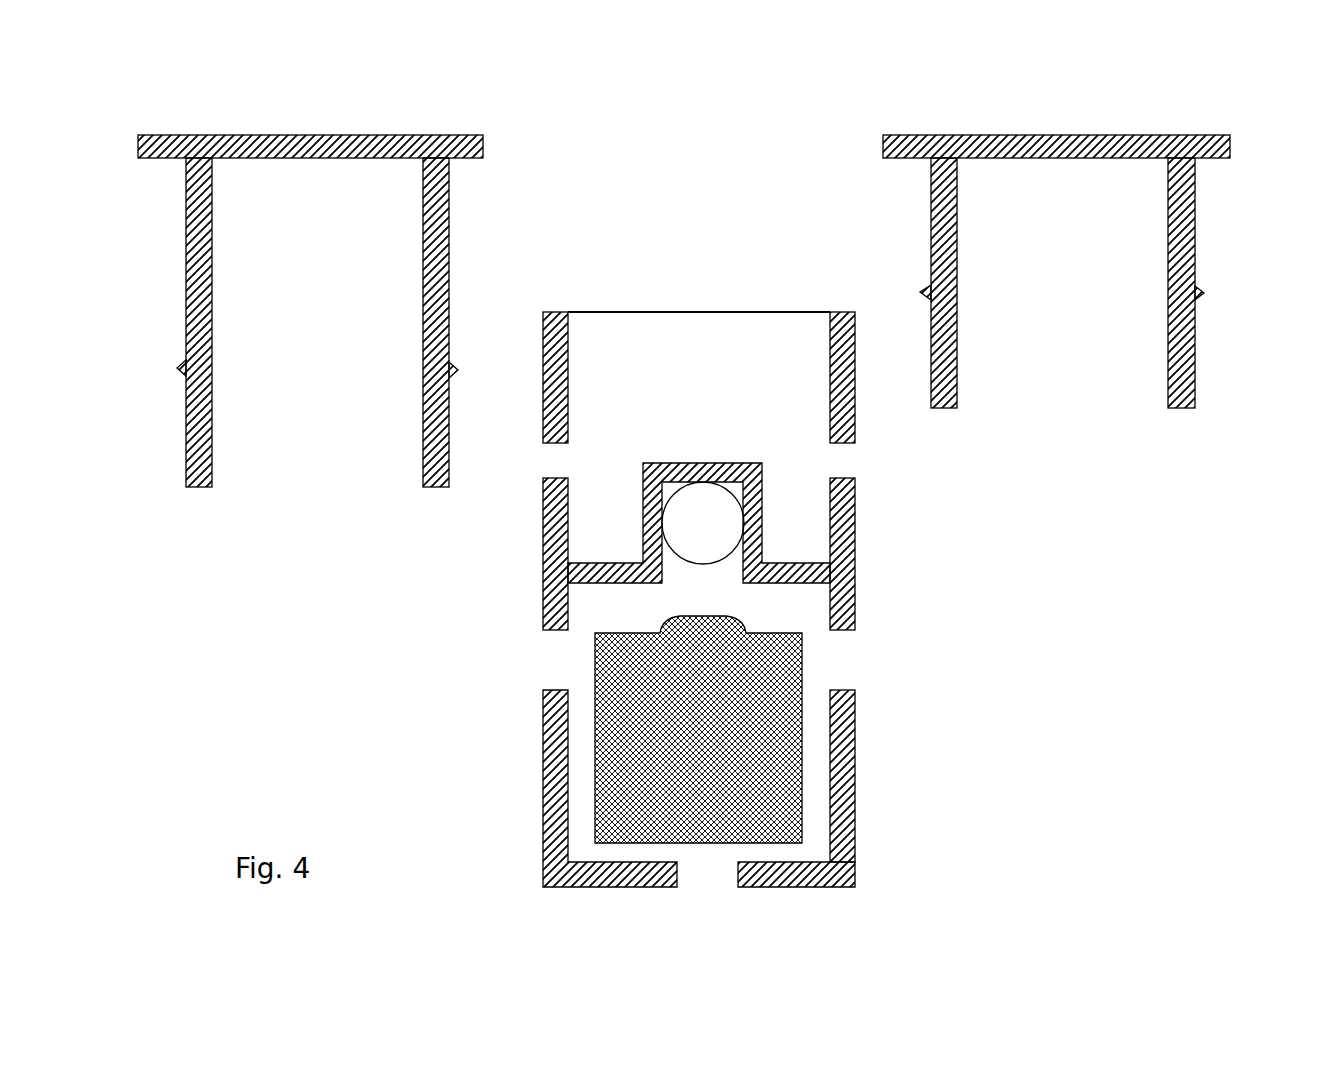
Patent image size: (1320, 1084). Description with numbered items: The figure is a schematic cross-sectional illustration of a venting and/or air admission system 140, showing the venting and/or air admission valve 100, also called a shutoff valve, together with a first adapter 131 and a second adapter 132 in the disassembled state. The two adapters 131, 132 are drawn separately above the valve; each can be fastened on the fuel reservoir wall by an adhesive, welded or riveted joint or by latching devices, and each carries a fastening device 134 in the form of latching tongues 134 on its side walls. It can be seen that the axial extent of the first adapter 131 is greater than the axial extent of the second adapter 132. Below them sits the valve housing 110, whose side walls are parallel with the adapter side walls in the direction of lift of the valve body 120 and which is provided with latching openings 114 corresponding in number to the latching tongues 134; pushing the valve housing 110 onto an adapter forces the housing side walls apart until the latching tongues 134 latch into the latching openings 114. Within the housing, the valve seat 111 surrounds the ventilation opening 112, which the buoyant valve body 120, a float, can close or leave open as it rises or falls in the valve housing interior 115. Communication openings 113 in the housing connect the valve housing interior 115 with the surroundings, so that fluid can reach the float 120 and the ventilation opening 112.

The venting and/or air admission valve 100 is at (1042, 906).
The valve housing 110 is at (543, 533).
The valve seat 111 is at (803, 562).
The ventilation opening 112 is at (692, 577).
The communication opening 113 is at (555, 660).
The latching opening 114 is at (845, 462).
The valve housing interior 115 is at (818, 758).
The valve body 120 is at (670, 788).
The first adapter 131 is at (447, 237).
The second adapter 132 is at (930, 207).
The latching tongue 134 is at (183, 368).
The venting and/or air admission system 140 is at (840, 95).